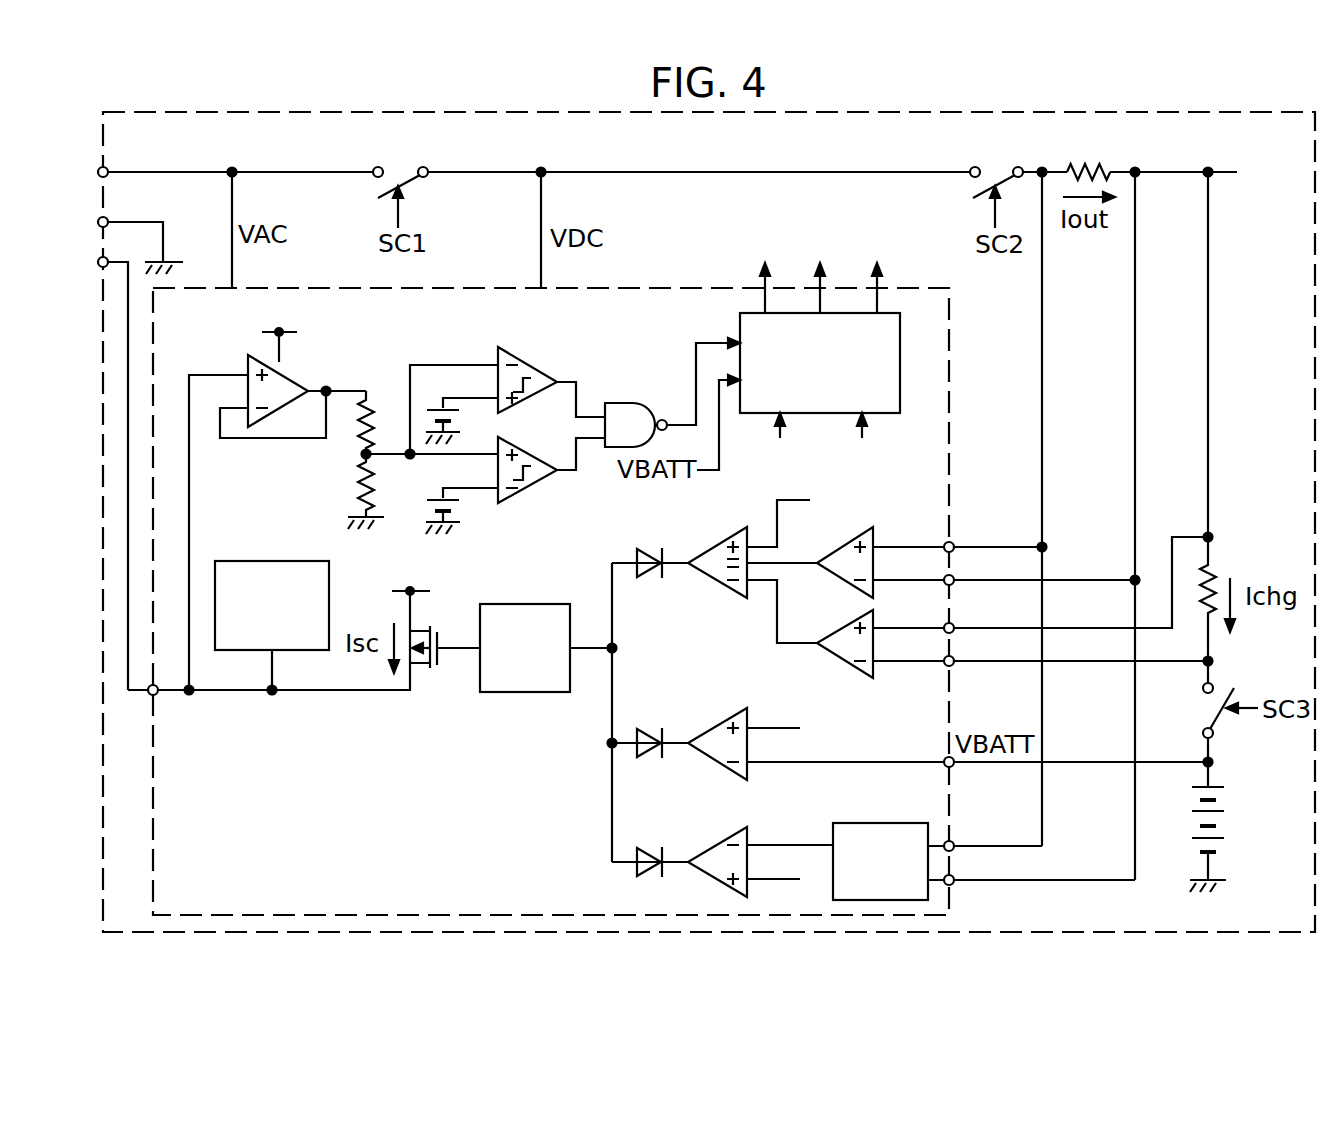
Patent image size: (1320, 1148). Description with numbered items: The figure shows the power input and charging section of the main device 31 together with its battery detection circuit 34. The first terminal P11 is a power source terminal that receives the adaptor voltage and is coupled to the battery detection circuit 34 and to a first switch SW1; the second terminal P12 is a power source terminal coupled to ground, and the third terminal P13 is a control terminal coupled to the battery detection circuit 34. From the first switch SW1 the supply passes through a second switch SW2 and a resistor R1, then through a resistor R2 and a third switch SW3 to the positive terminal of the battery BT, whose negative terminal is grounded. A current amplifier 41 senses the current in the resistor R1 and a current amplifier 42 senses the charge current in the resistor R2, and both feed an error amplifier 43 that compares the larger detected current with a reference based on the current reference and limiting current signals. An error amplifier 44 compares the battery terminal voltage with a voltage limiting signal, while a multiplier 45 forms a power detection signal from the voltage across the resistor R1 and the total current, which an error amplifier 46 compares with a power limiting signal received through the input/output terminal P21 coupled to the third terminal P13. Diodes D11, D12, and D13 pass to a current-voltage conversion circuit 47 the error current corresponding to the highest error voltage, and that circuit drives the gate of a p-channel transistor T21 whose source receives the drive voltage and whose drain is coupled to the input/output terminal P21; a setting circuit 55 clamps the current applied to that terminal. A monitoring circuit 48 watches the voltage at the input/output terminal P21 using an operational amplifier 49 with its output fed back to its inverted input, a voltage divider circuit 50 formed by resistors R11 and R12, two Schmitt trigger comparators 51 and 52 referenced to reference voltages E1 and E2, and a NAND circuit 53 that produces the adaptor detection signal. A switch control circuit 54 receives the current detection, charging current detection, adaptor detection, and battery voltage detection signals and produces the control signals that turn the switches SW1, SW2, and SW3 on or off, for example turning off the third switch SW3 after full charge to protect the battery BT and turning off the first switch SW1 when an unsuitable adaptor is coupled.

The main device 31 is at (138, 112).
The battery detection circuit 34 is at (950, 304).
The current amplifier 41 is at (875, 541).
The current amplifier 42 is at (875, 626).
The error amplifier 43 is at (712, 547).
The error amplifier 44 is at (712, 727).
The multiplier 45 is at (878, 823).
The error amplifier 46 is at (712, 846).
The current-voltage conversion circuit 47 is at (549, 604).
The monitoring circuit 48 is at (329, 494).
The operational amplifier 49 is at (296, 378).
The voltage divider circuit 50 is at (549, 416).
The comparator 51 is at (545, 360).
The comparator 52 is at (547, 462).
The NAND circuit 53 is at (620, 403).
The switch control circuit 54 is at (740, 327).
The setting circuit 55 is at (247, 561).
The first terminal P11 is at (108, 170).
The second terminal P12 is at (108, 220).
The third terminal P13 is at (128, 250).
The input/output terminal P21 is at (157, 696).
The first switch SW1 is at (405, 172).
The second switch SW2 is at (1002, 172).
The third switch SW3 is at (1216, 716).
The resistor R1 is at (1088, 176).
The resistor R2 is at (1214, 590).
The resistor R11 is at (360, 440).
The resistor R12 is at (356, 496).
The transistor T21 is at (440, 635).
The diode D11 is at (652, 549).
The diode D12 is at (652, 730).
The diode D13 is at (652, 849).
The reference voltage E1 is at (462, 407).
The reference voltage E2 is at (462, 498).
The battery BT is at (1222, 814).